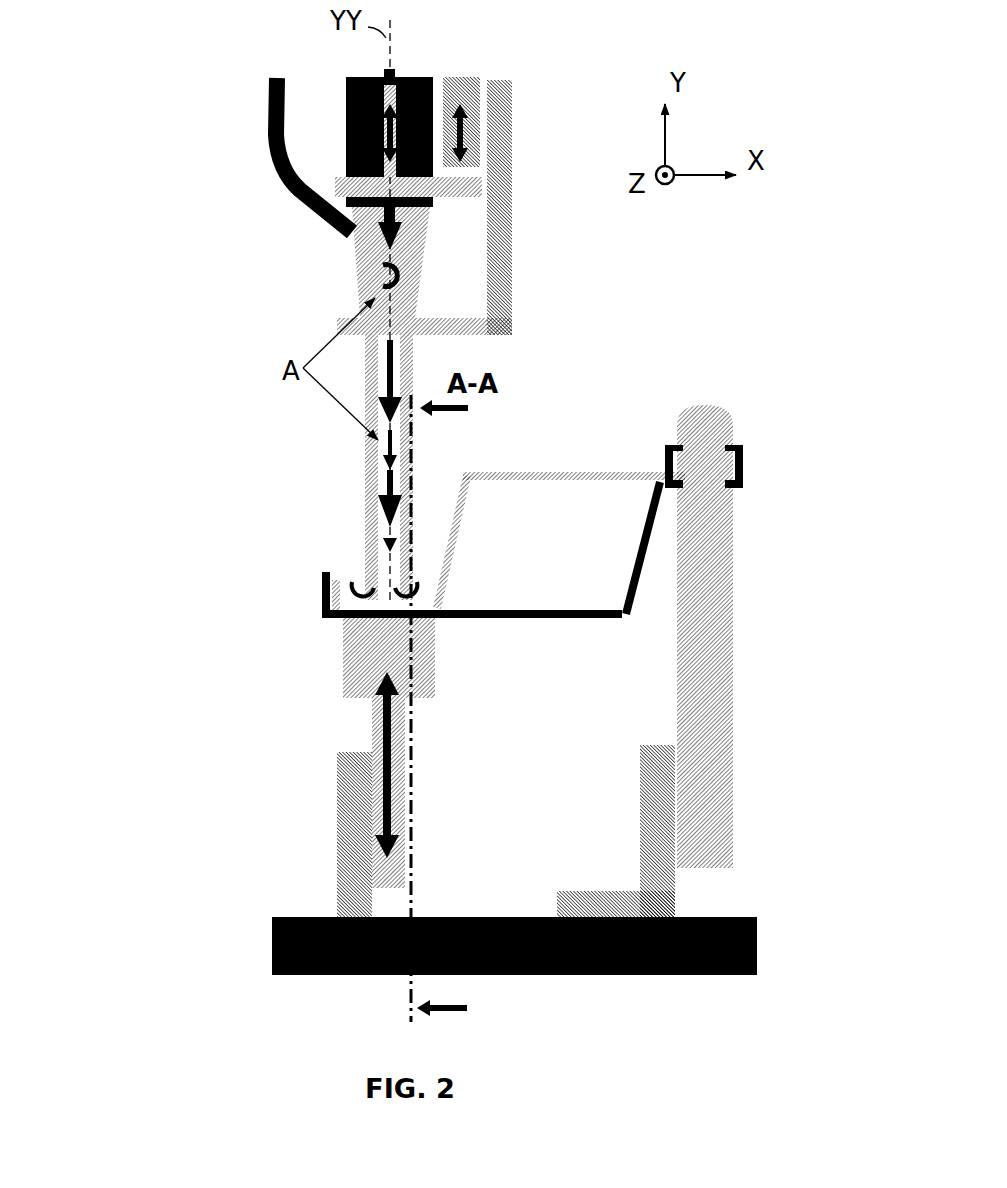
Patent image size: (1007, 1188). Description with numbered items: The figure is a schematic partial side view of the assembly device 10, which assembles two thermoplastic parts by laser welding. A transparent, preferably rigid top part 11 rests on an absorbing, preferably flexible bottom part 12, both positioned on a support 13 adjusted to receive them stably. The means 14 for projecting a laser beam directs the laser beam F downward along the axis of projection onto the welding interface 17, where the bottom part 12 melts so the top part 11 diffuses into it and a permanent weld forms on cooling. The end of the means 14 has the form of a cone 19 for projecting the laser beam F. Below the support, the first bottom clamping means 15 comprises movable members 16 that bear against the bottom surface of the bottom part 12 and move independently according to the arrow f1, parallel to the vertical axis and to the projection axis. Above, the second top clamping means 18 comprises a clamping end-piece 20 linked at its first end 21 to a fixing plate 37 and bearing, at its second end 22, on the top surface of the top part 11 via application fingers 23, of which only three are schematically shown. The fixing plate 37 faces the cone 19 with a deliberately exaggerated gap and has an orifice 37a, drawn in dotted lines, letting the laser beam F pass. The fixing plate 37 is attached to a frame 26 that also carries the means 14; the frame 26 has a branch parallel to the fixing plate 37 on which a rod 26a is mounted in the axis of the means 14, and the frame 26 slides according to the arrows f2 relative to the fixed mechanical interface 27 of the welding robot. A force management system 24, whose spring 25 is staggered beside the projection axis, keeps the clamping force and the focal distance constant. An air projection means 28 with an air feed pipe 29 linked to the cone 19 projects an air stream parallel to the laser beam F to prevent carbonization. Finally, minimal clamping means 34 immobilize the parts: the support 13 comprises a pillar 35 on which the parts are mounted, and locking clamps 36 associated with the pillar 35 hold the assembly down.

The assembly device 10 is at (188, 363).
The top part 11 is at (548, 474).
The bottom part 12 is at (510, 608).
The support 13 is at (551, 901).
The means for projecting a laser beam 14 is at (453, 173).
The first bottom clamping means 15 is at (416, 788).
The movable members 16 is at (407, 657).
The welding interface 17 is at (375, 613).
The second top clamping means 18 is at (297, 412).
The cone 19 is at (413, 290).
The clamping end-piece 20 is at (356, 437).
The first end 21 is at (418, 342).
The second end 22 is at (423, 595).
The application fingers 23 is at (405, 522).
The force management system 24 is at (449, 58).
The spring 25 is at (462, 112).
The frame 26 is at (505, 170).
The rod 26a is at (438, 203).
The mechanical interface 27 is at (386, 70).
The air projection means 28 is at (250, 148).
The air feed pipe 29 is at (298, 187).
The minimal clamping means 34 is at (766, 492).
The pillar 35 is at (698, 537).
The locking clamps 36 is at (670, 445).
The fixing plate 37 is at (348, 325).
The orifice 37a is at (400, 330).
The laser beam F is at (395, 246).
The arrow of movable member movement f1 is at (378, 728).
The arrows of frame sliding f2 is at (395, 143).